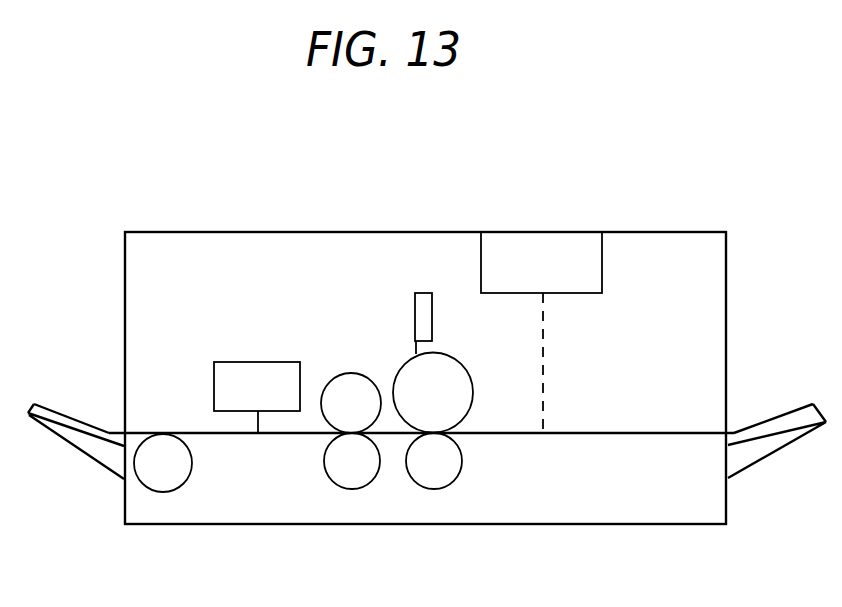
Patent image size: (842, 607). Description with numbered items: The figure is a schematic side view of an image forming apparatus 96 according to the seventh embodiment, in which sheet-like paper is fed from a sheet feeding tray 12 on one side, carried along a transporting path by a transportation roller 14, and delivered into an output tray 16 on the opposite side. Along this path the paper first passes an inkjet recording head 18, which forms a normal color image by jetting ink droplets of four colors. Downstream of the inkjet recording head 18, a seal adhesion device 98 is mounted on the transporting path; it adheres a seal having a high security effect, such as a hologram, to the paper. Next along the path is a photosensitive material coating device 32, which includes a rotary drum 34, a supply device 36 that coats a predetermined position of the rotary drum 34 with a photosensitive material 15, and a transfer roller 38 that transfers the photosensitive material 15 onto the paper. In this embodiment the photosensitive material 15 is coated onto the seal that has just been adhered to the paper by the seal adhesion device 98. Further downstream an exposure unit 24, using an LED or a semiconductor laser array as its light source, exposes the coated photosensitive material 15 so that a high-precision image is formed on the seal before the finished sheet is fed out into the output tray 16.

The image forming apparatus 96 is at (229, 193).
The sheet feeding tray 12 is at (77, 438).
The output tray 16 is at (768, 442).
The transportation roller 14 is at (165, 473).
The inkjet recording head 18 is at (255, 378).
The seal adhesion device 98 is at (334, 355).
The photosensitive material coating device 32 is at (408, 301).
The supply device 36 is at (422, 297).
The photosensitive material 15 is at (415, 347).
The rotary drum 34 is at (443, 360).
The transfer roller 38 is at (437, 472).
The exposure unit 24 is at (542, 250).